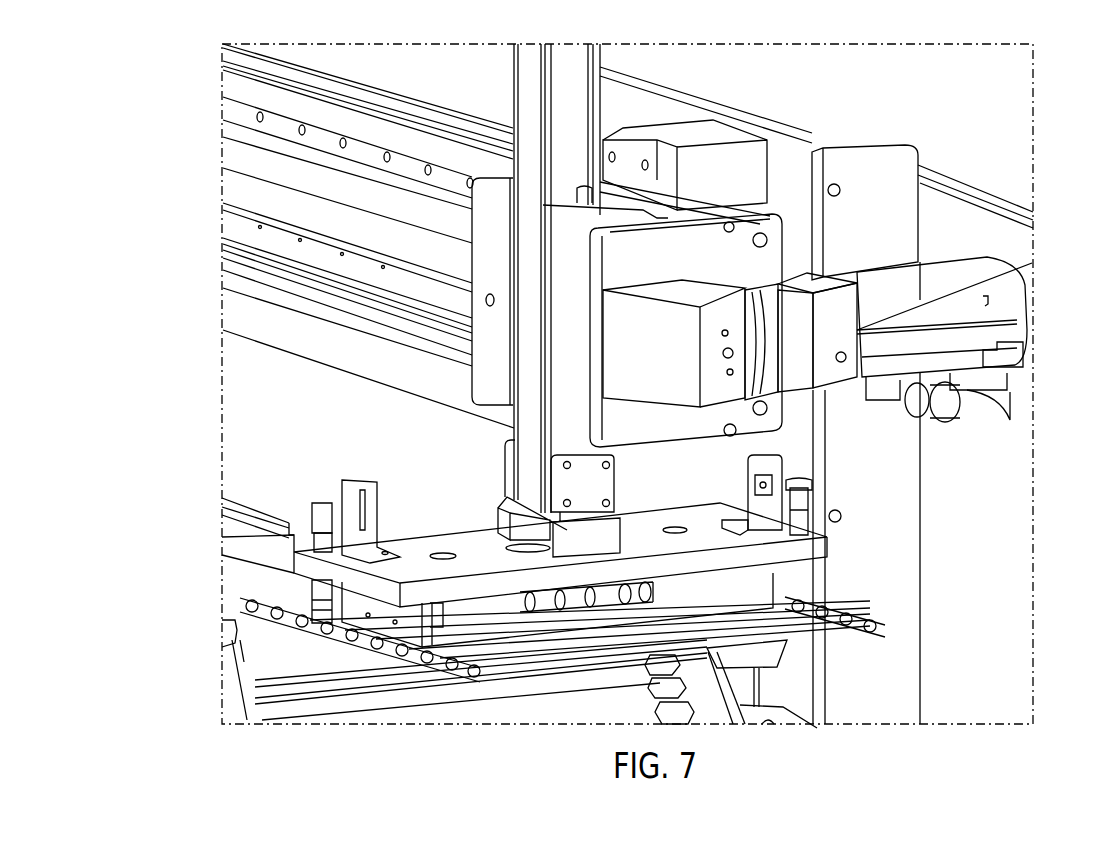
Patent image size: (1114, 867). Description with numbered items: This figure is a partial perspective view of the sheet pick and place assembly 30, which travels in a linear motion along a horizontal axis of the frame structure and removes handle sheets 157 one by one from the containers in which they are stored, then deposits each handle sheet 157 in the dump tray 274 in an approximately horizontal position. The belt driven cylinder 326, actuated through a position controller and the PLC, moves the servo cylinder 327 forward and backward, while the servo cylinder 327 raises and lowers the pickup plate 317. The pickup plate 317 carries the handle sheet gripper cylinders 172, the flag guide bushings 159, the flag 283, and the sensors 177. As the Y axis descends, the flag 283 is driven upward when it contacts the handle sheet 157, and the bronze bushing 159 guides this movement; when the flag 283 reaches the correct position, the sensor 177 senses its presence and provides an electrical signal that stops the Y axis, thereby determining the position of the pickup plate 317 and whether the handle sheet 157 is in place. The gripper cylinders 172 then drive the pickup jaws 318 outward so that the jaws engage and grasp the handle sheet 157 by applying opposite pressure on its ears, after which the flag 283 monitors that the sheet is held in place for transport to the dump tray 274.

The sheet pick and place assembly 30 is at (628, 369).
The belt driven cylinder 326 is at (940, 330).
The servo cylinder 327 is at (338, 371).
The pickup plate 317 is at (296, 471).
The flag 283 is at (632, 536).
The sensor 177 is at (912, 469).
The flag guide bushing 159 is at (239, 549).
The handle sheet gripper cylinder 172 is at (698, 551).
The handle sheet 157 is at (659, 658).
The pickup jaws 318 is at (291, 659).
The dump tray 274 is at (797, 706).